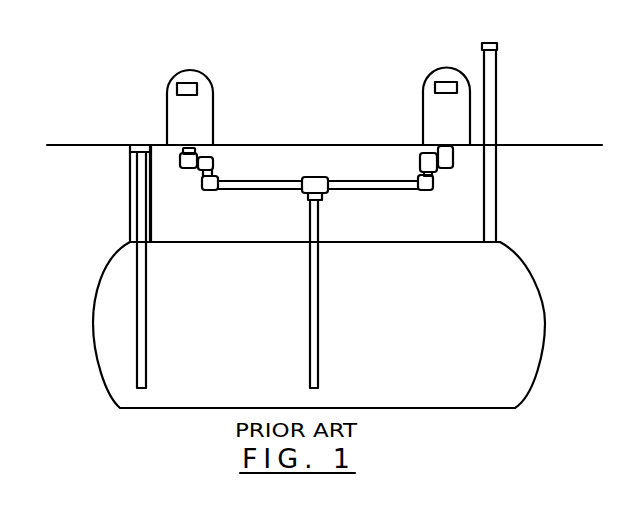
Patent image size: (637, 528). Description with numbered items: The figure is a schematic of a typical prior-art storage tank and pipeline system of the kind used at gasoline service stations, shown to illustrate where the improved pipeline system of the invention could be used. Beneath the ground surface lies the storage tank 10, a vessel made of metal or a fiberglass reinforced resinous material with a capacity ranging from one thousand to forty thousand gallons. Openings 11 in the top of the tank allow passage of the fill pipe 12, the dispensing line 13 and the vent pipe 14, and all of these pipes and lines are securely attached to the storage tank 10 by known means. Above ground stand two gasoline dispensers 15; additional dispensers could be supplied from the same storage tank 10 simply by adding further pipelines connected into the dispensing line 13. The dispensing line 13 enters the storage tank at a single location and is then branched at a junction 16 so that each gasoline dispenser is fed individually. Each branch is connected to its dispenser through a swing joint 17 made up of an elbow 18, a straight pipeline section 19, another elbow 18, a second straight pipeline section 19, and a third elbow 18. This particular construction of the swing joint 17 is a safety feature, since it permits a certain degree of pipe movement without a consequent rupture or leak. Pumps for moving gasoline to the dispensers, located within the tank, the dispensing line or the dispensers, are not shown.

The storage tank 10 is at (300, 325).
The openings 11 is at (354, 223).
The fill pipe 12 is at (113, 266).
The dispensing line 13 is at (292, 294).
The vent pipe 14 is at (514, 142).
The gasoline dispensers 15 is at (289, 106).
The junction 16 is at (318, 175).
The swing joint 17 is at (210, 204).
The elbow 18 is at (294, 181).
The straight pipeline section 19 is at (325, 141).